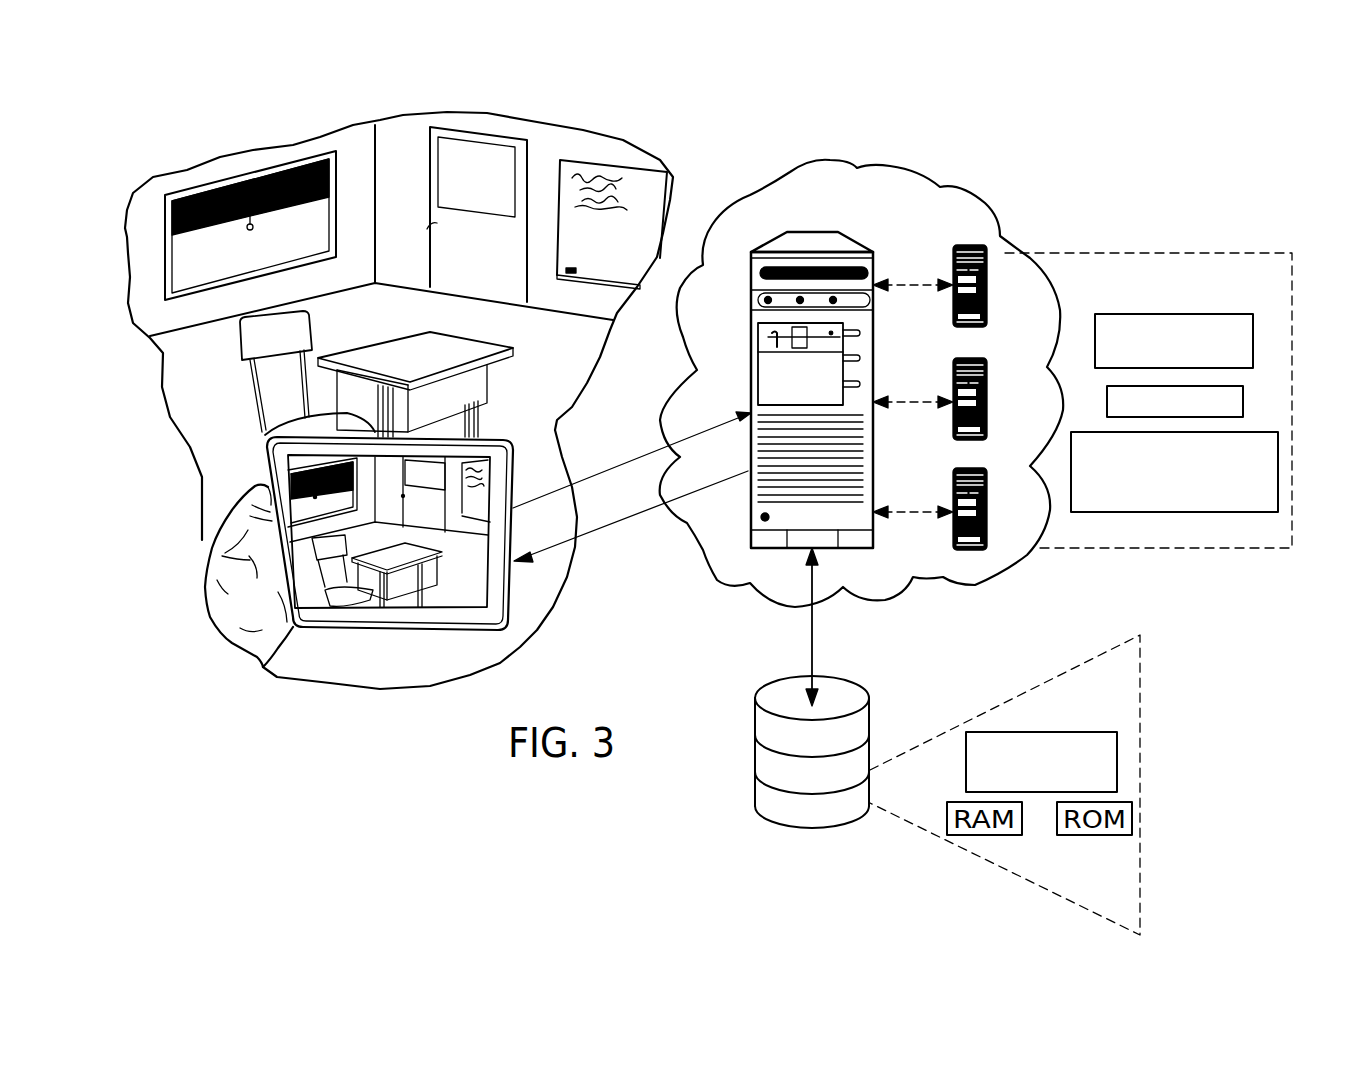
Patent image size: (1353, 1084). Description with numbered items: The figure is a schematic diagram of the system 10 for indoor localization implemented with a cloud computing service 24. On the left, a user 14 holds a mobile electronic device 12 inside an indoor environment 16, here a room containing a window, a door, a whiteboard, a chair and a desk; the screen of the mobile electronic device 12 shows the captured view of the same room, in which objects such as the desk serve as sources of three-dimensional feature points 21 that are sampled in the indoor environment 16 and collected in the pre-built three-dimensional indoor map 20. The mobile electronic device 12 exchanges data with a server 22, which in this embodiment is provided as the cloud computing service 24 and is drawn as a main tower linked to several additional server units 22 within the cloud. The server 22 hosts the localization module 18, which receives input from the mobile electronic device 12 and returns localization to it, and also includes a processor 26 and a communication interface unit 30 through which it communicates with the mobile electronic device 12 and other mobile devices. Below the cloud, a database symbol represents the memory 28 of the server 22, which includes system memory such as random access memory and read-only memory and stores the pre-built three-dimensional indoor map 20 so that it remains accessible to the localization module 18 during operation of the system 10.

The system for indoor localization 10 is at (742, 137).
The mobile electronic device 12 is at (381, 632).
The user 14 is at (232, 583).
The indoor environment 16 is at (399, 400).
The localization module 18 is at (1122, 314).
The pre-built 3D indoor map 20 is at (1056, 732).
The 3D feature points 21 is at (418, 332).
The server 22 is at (815, 242).
The cloud computing service 24 is at (909, 163).
The processor 26 is at (1115, 388).
The memory 28 is at (838, 695).
The communication interface unit 30 is at (1115, 513).